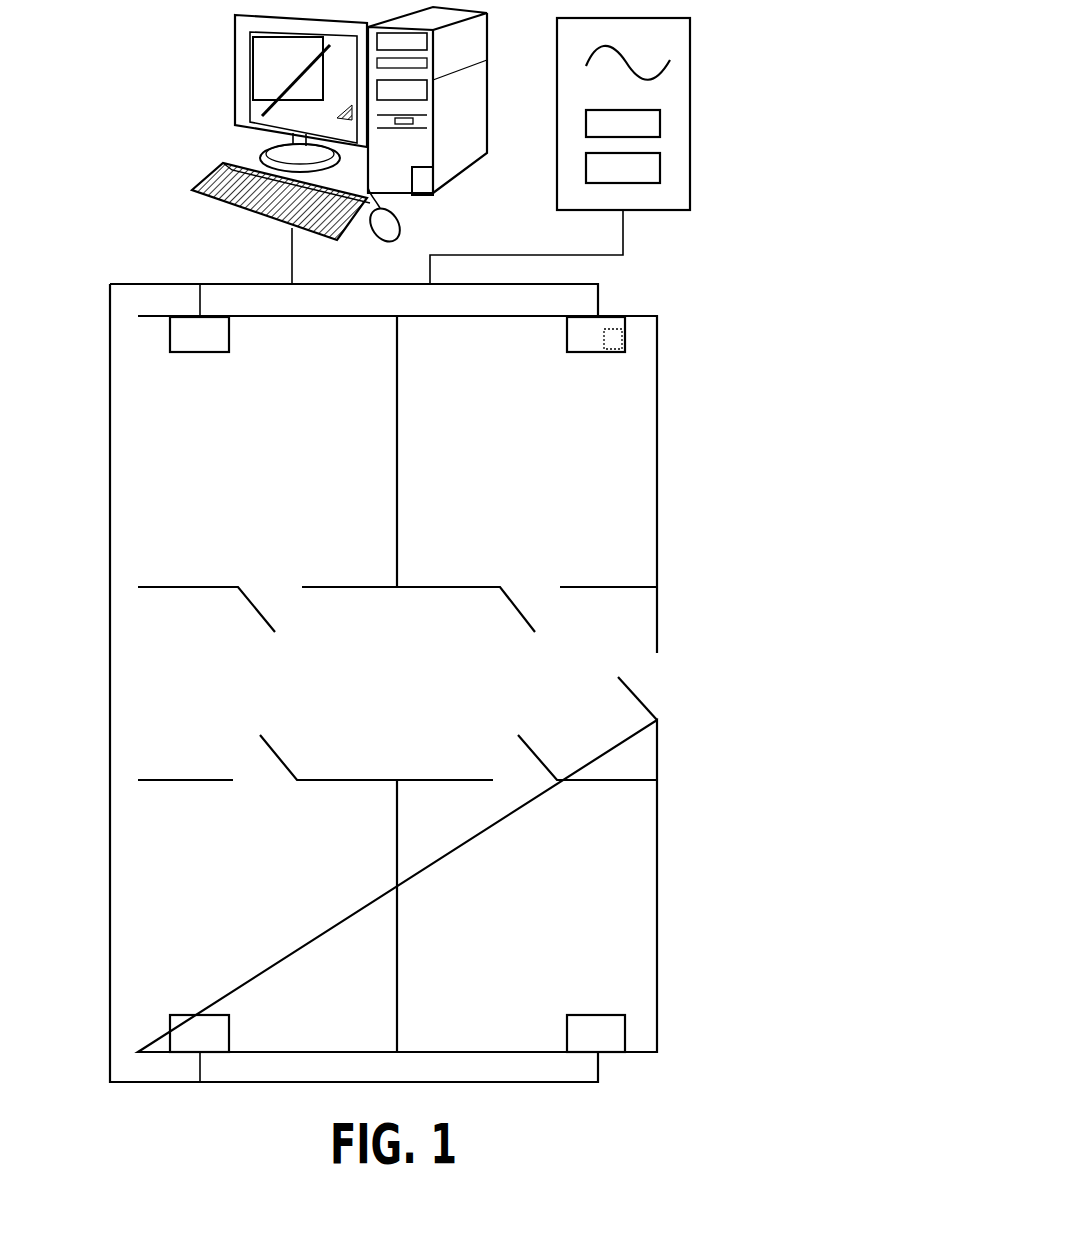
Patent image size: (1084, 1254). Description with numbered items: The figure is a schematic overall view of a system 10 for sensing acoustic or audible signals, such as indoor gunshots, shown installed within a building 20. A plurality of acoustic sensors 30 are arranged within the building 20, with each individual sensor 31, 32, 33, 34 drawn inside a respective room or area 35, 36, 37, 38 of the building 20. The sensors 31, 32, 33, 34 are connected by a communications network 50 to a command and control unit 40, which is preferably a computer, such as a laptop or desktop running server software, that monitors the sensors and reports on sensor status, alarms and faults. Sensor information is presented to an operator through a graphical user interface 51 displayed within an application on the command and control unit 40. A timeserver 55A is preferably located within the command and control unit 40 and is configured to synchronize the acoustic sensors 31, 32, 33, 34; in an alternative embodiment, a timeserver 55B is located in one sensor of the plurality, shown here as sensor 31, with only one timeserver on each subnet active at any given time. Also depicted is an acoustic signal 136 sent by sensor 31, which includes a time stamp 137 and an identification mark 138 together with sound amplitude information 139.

The system 10 is at (852, 232).
The building 20 is at (660, 549).
The plurality of acoustic sensors 30 is at (163, 330).
The sensor 31 is at (577, 353).
The sensor 32 is at (217, 353).
The sensor 33 is at (217, 1013).
The sensor 34 is at (582, 1013).
The room or area 35 is at (597, 477).
The room or area 36 is at (200, 477).
The room or area 37 is at (200, 915).
The room or area 38 is at (597, 913).
The command and control unit 40 is at (226, 107).
The communications network 50 is at (165, 283).
The graphical user interface 51 is at (250, 70).
The timeserver 55A is at (437, 184).
The timeserver 55B is at (613, 355).
The acoustic signal 136 is at (667, 212).
The time stamp 137 is at (660, 172).
The identification mark 138 is at (660, 125).
The sound amplitude information 139 is at (662, 66).